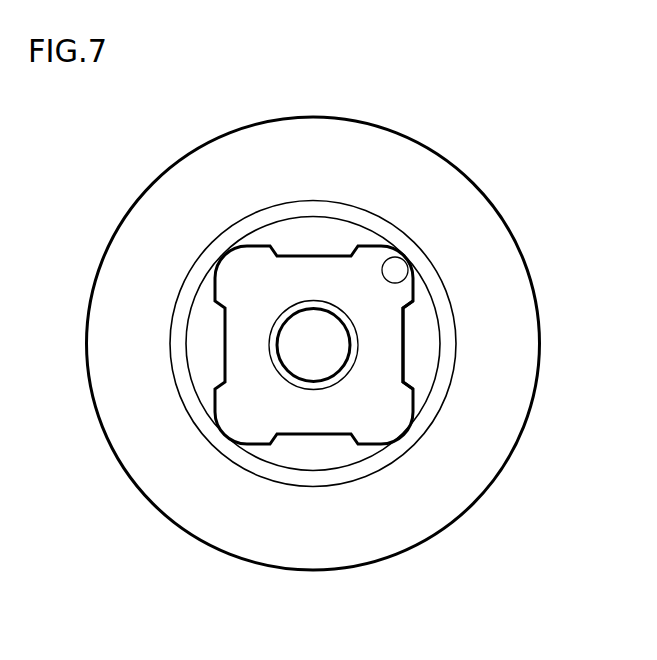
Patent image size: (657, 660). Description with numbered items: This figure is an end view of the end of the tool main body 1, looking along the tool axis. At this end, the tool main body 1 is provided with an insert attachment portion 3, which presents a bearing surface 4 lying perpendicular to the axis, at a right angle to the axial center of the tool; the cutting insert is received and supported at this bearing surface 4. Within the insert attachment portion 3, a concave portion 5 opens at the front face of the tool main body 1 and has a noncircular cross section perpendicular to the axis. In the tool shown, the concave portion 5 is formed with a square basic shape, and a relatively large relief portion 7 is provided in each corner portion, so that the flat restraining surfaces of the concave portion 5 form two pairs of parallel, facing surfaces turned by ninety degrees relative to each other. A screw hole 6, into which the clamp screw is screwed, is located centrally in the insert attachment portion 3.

The tool main body 1 is at (207, 142).
The insert attachment portion 3 is at (437, 373).
The bearing surface 4 is at (420, 333).
The concave portion 5 is at (312, 270).
The screw hole 6 is at (285, 364).
The relief portion 7 is at (410, 276).